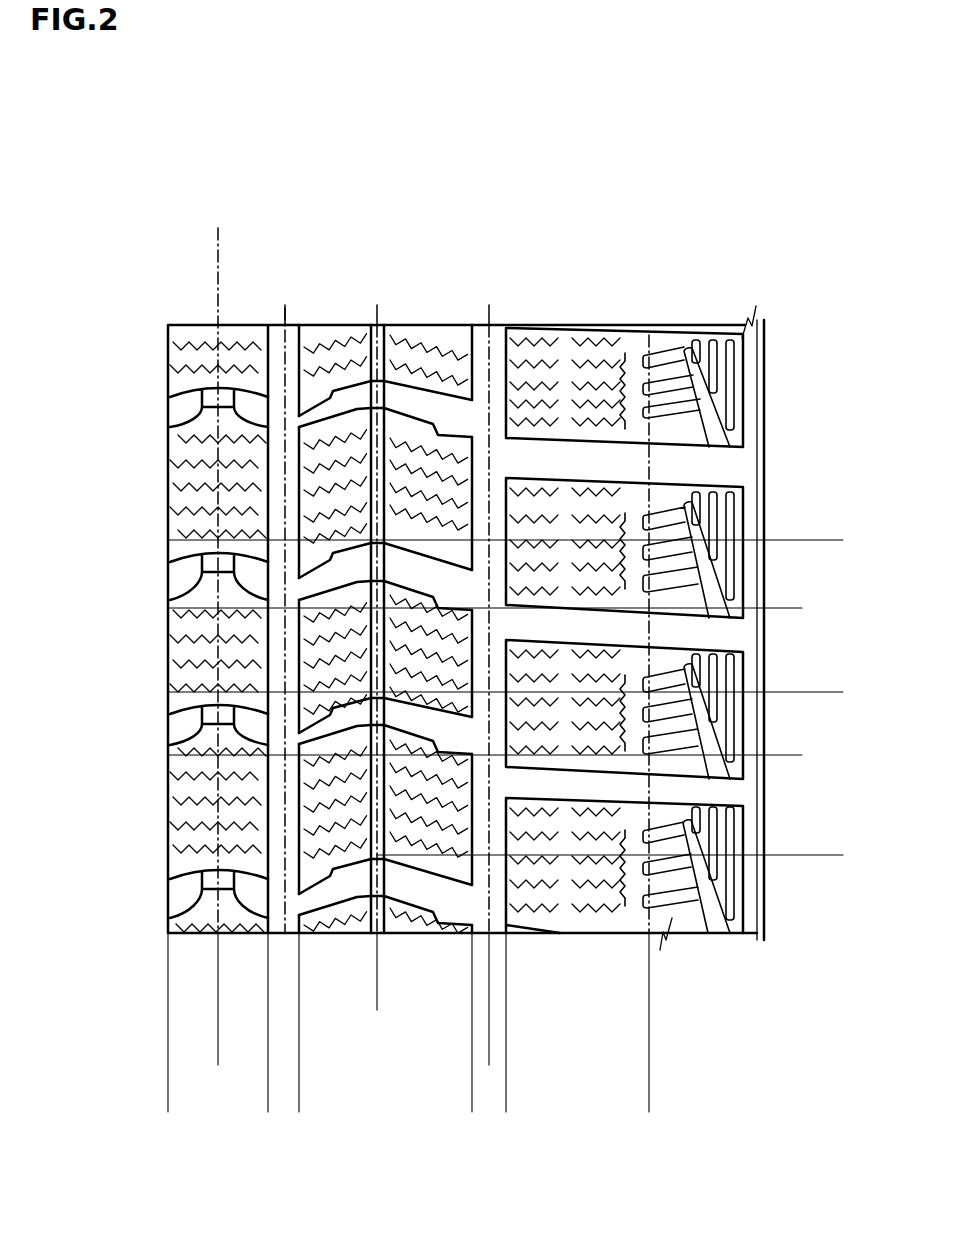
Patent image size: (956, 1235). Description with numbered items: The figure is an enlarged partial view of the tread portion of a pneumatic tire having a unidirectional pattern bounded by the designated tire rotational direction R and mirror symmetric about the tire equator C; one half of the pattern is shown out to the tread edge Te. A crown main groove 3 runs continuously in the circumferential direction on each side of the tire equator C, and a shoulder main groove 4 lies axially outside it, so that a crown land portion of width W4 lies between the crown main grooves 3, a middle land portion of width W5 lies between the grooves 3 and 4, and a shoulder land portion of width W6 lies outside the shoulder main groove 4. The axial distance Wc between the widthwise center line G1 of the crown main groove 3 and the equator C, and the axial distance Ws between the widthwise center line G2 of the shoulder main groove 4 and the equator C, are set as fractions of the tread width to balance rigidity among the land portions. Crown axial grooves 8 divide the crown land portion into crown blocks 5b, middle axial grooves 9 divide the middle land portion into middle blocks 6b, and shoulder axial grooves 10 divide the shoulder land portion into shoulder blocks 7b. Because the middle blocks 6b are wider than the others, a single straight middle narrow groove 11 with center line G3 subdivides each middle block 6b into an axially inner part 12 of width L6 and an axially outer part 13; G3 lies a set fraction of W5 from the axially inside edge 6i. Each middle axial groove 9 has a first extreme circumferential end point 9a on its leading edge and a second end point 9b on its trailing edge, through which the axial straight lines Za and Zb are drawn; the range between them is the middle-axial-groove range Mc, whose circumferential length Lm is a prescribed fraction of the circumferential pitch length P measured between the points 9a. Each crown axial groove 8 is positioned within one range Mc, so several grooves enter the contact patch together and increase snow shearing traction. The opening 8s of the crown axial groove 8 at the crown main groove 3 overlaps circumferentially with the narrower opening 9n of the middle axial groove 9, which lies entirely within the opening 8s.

The crown block 5b is at (184, 322).
The tire equator C is at (217, 566).
The axially inside edge of the middle block 6i is at (246, 345).
The widthwise center line of the crown main groove G1 is at (282, 304).
The middle block 6b is at (435, 213).
The axially inner part 12 is at (330, 333).
The axially outer part 13 is at (427, 333).
The widthwise center line of the middle narrow groove G3 is at (375, 607).
The widthwise center line of the shoulder main groove G2 is at (485, 303).
The shoulder block 7b is at (568, 330).
The tread edge Te is at (649, 335).
The opening of the crown axial groove 8s is at (190, 413).
The opening of the middle axial groove 9n is at (300, 412).
The first extreme circumferential end point 9a is at (372, 538).
The first axial straight line Za is at (168, 540).
The middle-axial-groove range Mc is at (158, 543).
The second axial straight line Zb is at (168, 608).
The second extreme circumferential end point 9b is at (470, 612).
The crown main groove 3 is at (277, 815).
The tire rotational direction R is at (129, 847).
The crown axial groove 8 is at (183, 895).
The middle axial groove 9 is at (456, 413).
The shoulder axial groove 10 is at (617, 469).
The circumferential length of the middle-axial-groove range Lm is at (795, 508).
The circumferential pitch length of the middle axial grooves P is at (839, 540).
The middle narrow groove 11 is at (388, 915).
The shoulder main groove 4 is at (497, 890).
The axial distance between the crown main groove center line and the tire equator Wc is at (218, 1003).
The width of inner middle block L6 is at (299, 1003).
The axial distance between the shoulder main groove center line and the tire equator Ws is at (218, 1057).
The width of the crown land portion W4 is at (168, 1105).
The middle block width W5 is at (299, 1105).
The width of shoulder land portion W6 is at (506, 1105).